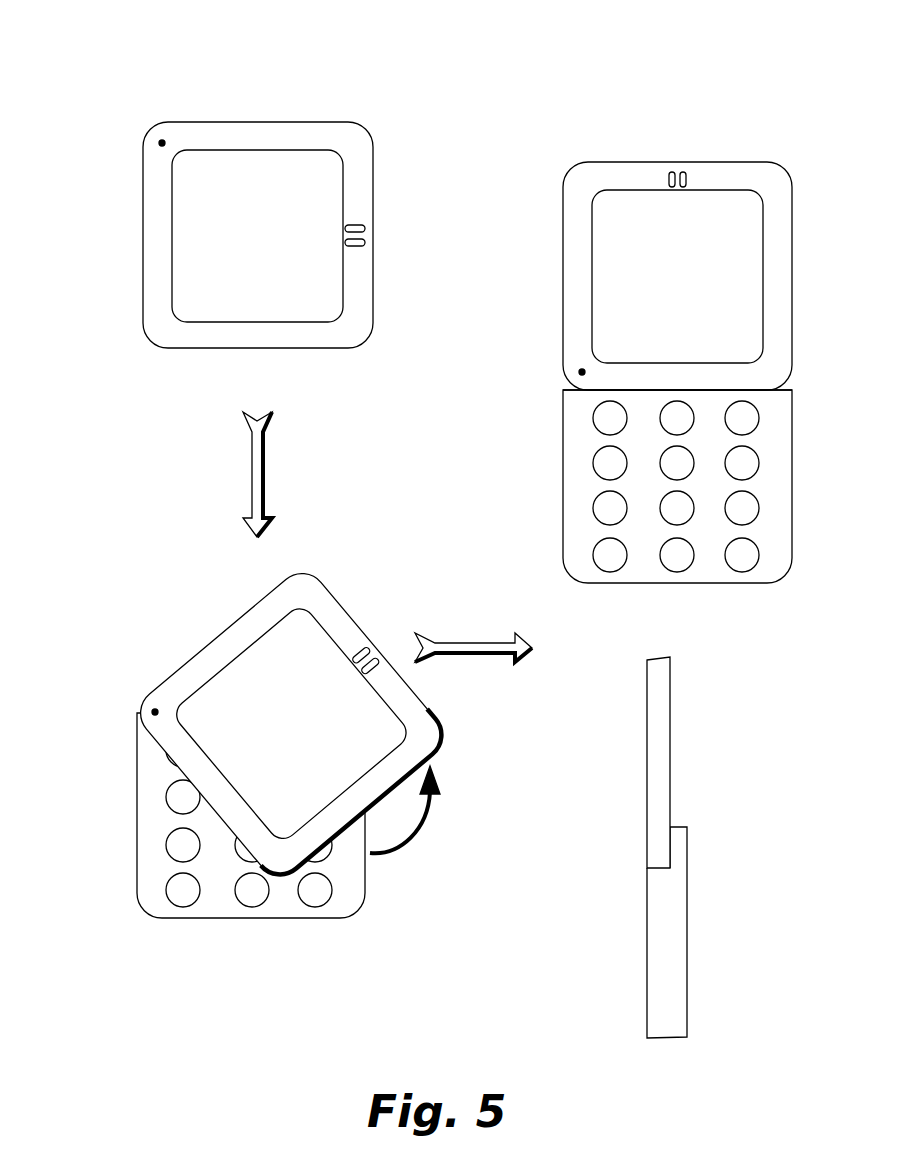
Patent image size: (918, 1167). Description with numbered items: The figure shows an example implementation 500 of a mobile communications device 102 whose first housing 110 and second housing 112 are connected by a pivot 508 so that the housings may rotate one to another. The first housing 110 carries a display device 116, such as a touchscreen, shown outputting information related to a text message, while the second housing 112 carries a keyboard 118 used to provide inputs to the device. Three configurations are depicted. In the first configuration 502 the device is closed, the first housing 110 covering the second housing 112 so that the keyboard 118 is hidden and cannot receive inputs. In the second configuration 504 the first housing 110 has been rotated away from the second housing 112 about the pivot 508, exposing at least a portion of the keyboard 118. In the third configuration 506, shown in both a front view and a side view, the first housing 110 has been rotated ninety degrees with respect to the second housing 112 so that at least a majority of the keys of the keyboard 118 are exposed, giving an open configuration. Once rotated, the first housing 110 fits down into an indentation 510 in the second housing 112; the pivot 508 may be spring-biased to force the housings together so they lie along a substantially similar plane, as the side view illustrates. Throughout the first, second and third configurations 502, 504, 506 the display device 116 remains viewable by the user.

The example implementation 500 is at (696, 66).
The first configuration 502 is at (372, 74).
The second configuration 504 is at (358, 542).
The third configuration 506 is at (573, 135).
The mobile communications device 102 is at (342, 348).
The first housing 110 is at (168, 335).
The second housing 112 is at (563, 465).
The display device 116 is at (172, 235).
The keyboard 118 is at (707, 573).
The pivot 508 is at (160, 140).
The indentation 510 is at (563, 390).